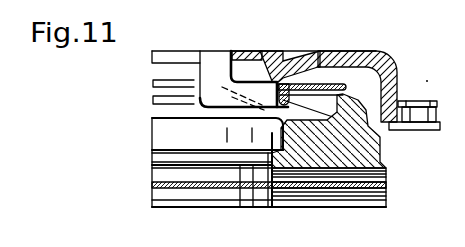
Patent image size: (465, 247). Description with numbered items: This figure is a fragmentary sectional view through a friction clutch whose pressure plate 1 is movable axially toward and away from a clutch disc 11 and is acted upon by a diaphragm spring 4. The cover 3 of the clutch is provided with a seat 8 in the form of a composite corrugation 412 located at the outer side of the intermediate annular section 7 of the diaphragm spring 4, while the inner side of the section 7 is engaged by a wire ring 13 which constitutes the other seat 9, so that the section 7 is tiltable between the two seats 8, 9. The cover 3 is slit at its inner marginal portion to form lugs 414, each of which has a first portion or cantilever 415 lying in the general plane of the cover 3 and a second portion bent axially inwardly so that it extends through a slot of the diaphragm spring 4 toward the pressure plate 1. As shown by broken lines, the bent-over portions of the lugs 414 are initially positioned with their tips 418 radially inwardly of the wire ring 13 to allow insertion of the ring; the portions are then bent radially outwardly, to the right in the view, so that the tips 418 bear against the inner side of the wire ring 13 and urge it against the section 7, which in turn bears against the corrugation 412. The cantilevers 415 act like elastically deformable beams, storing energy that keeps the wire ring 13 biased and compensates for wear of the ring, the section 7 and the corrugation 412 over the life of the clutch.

The pressure plate 1 is at (165, 132).
The cover 3 is at (395, 77).
The diaphragm spring 4 is at (253, 80).
The intermediate annular section 7 is at (312, 82).
The seat 8 is at (296, 60).
The seat 9 is at (386, 125).
The clutch disc 11 is at (247, 190).
The wire ring 13 is at (411, 121).
The composite corrugation 412 is at (278, 70).
The lugs 414 is at (198, 102).
The first portions or cantilevers 415 is at (209, 50).
The tips 418 is at (382, 163).